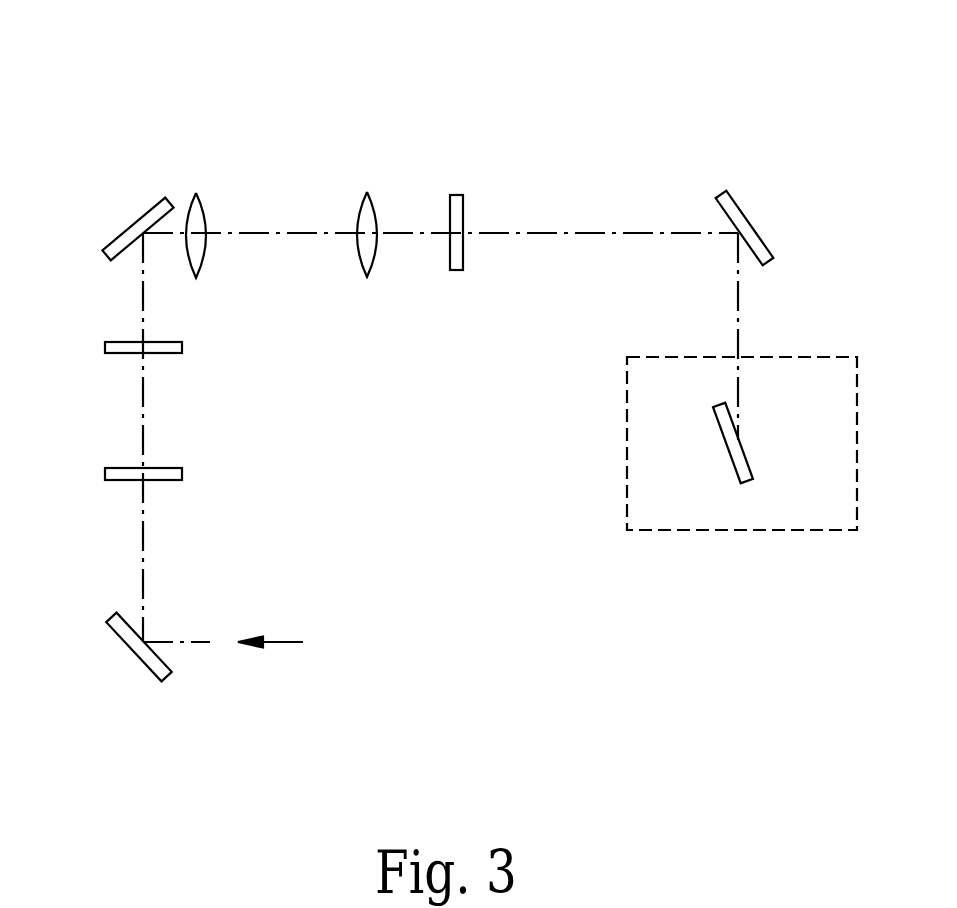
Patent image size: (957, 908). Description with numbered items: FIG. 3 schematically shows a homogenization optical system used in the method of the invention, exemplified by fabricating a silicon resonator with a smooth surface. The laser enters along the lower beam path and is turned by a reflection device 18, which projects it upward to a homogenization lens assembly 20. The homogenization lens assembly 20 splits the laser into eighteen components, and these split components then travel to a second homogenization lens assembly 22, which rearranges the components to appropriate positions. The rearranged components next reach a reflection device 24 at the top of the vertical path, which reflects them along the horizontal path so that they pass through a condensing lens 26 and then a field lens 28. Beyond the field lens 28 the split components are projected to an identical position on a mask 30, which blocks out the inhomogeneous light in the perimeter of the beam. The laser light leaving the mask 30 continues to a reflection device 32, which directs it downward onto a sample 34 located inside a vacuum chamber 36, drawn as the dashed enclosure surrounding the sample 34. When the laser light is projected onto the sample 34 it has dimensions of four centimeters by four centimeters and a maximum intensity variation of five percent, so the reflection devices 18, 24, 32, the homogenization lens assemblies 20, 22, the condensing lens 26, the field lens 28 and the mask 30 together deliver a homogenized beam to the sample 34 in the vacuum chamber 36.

The reflection device 18 is at (142, 663).
The homogenization lens assembly 20 is at (125, 480).
The homogenization lens assembly 22 is at (163, 353).
The reflection device 24 is at (142, 215).
The condensing lens 26 is at (205, 217).
The field lens 28 is at (373, 207).
The mask 30 is at (463, 217).
The reflection device 32 is at (743, 213).
The sample 34 is at (727, 447).
The vacuum chamber 36 is at (717, 530).